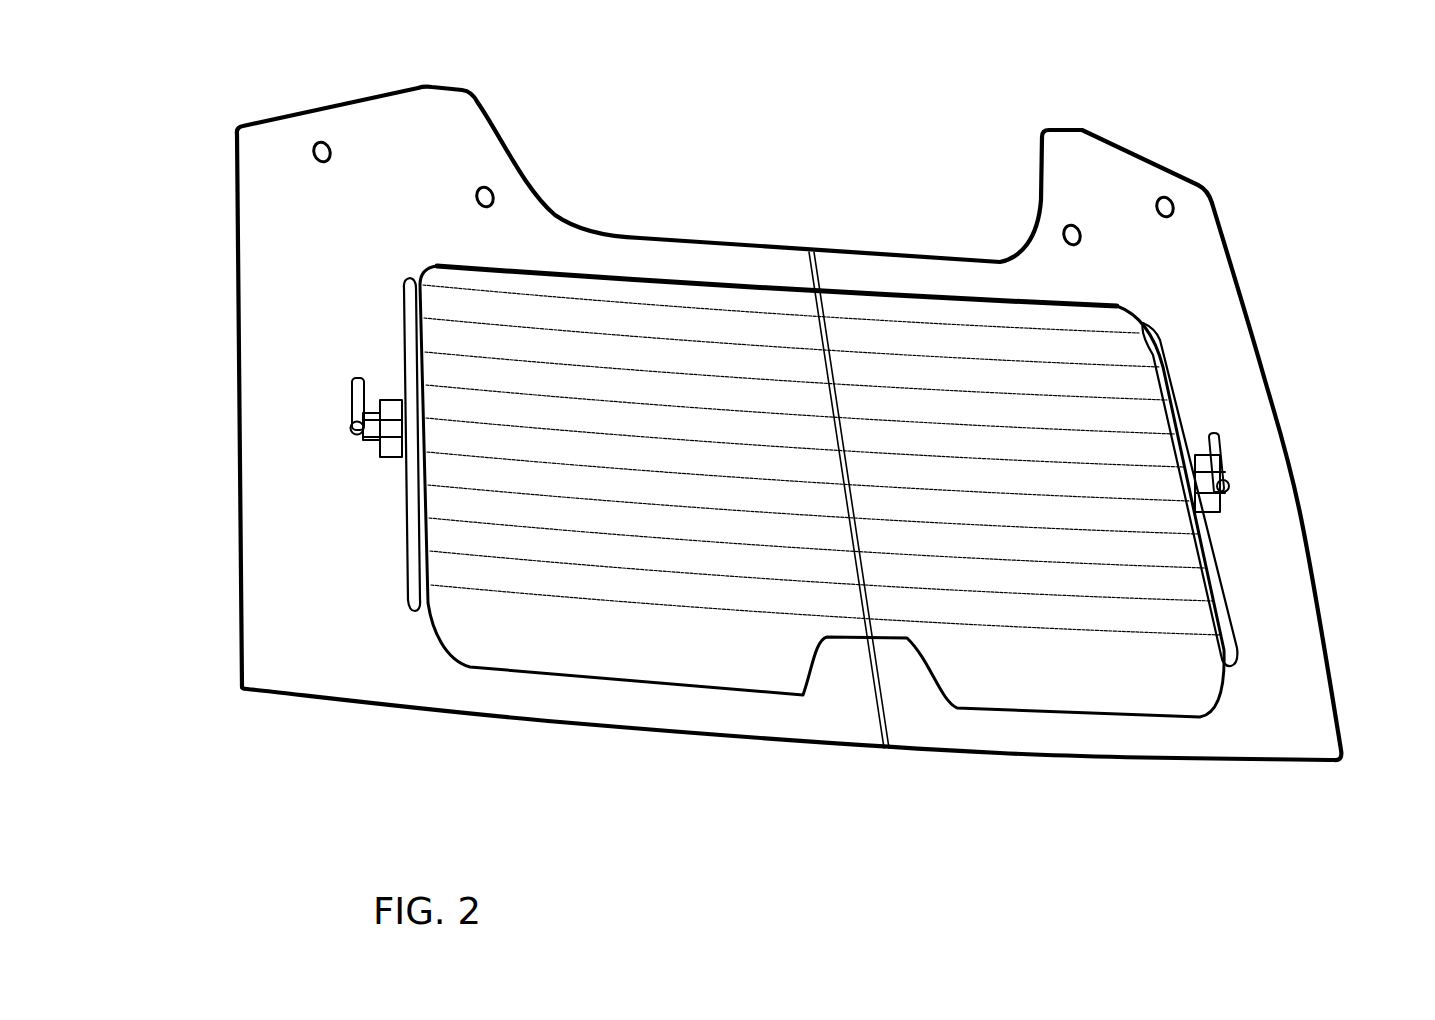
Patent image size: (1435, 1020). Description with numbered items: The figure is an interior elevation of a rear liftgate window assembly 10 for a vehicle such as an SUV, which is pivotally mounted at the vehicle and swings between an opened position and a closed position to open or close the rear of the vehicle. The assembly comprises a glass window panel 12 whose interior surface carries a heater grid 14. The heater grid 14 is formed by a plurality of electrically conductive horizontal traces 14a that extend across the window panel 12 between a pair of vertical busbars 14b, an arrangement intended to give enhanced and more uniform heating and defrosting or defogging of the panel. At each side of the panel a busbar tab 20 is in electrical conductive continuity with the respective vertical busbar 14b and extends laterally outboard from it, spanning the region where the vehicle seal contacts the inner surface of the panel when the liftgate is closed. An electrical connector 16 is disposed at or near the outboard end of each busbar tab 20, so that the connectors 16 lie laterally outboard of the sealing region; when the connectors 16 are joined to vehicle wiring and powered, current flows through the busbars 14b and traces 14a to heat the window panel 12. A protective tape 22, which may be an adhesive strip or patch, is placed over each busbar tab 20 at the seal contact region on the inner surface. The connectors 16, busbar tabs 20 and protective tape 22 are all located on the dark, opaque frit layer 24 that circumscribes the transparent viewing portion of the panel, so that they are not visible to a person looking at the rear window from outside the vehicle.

The rear liftgate window assembly 10 is at (765, 153).
The window panel 12 is at (1242, 192).
The heater grid 14 is at (962, 635).
The conductive traces 14a is at (918, 355).
The busbars 14b is at (397, 312).
The electrical connector 16 is at (358, 418).
The busbar tab 20 is at (373, 440).
The protective tape 22 is at (393, 447).
The frit layer 24 is at (1215, 310).